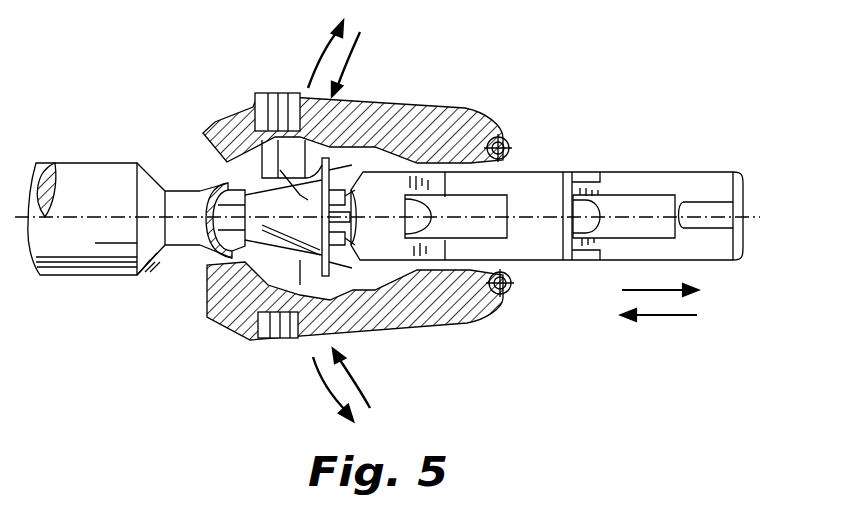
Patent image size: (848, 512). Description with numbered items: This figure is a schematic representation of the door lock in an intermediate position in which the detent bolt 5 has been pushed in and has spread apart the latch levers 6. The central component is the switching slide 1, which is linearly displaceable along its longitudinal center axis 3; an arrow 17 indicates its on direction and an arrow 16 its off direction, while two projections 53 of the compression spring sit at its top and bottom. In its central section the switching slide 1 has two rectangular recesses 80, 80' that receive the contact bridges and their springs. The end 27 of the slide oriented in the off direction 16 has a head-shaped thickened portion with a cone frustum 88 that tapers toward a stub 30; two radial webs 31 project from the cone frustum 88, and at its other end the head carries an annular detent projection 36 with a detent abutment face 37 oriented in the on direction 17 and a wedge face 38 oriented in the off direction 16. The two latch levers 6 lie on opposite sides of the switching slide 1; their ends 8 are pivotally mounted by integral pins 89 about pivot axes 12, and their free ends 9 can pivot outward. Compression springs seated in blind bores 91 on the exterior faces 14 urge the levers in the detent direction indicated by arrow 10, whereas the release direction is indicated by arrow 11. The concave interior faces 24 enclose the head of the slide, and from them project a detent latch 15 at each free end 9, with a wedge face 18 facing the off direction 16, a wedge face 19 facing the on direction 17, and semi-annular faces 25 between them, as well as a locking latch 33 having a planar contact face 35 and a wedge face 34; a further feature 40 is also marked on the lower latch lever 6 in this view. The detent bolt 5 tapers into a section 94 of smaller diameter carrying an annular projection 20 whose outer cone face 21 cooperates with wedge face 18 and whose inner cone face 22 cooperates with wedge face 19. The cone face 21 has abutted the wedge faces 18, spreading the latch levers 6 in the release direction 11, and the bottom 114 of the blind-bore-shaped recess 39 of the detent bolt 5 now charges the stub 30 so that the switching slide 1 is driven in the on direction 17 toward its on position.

The switching slide 1 is at (686, 172).
The longitudinal center axis 3 is at (88, 225).
The detent bolt 5 is at (66, 170).
The latch levers 6 is at (456, 100).
The ends of the latch levers 8 is at (513, 138).
The free ends 9 is at (208, 125).
The detent direction 10 is at (360, 43).
The release direction 11 is at (322, 55).
The pivot axes 12 is at (497, 132).
The exterior faces 14 is at (424, 107).
The detent latch 15 is at (233, 120).
The off direction 16 is at (660, 316).
The on direction 17 is at (622, 290).
The wedge face 18 is at (224, 142).
The wedge face 19 is at (263, 92).
The annular projection 20 is at (204, 297).
The outer cone face 21 is at (258, 337).
The inner cone face 22 is at (206, 252).
The interior faces 24 is at (290, 95).
The semi-annular faces 25 is at (216, 153).
The end of the switching slide 27 is at (288, 332).
The stub 30 is at (213, 184).
The radial webs 31 is at (340, 209).
The locking latch 33 is at (354, 170).
The wedge face 34 is at (369, 103).
The planar contact face 35 is at (340, 102).
The detent projection 36 is at (291, 257).
The detent abutment face 37 is at (353, 237).
The wedge face 38 is at (350, 196).
The blind bore-shaped recess 39 is at (208, 231).
The arm portion 40 is at (363, 332).
The projections 53 is at (569, 172).
The rectangular recess 80 is at (473, 211).
The rectangular recess 80' is at (653, 180).
The cone frustum 88 is at (292, 170).
The pins 89 is at (508, 133).
The blind bores 91 is at (257, 98).
The section having a smaller diameter 94 is at (158, 262).
The bottom 114 is at (166, 193).